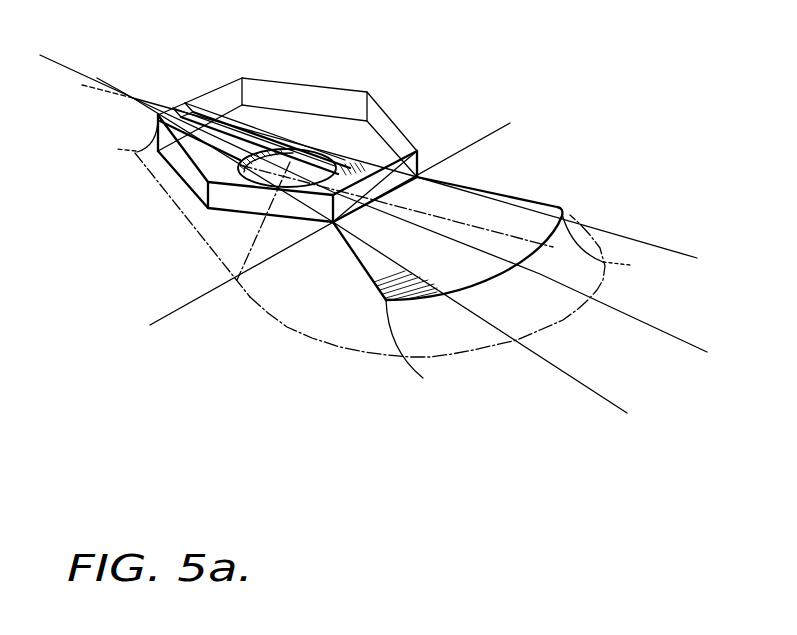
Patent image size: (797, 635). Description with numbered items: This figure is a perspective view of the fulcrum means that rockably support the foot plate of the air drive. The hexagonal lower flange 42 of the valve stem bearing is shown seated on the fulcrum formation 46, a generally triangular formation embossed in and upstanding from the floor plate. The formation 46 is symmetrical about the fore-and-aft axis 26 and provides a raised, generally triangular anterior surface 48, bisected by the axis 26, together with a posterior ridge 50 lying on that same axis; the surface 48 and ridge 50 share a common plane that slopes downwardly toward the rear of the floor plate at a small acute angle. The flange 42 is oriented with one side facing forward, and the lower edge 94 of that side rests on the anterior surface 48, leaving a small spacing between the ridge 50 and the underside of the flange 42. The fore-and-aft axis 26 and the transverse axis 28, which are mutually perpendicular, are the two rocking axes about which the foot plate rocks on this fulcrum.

The fore-and-aft axis 26 is at (670, 333).
The transverse axis 28 is at (192, 302).
The polygonal flange 42 is at (193, 192).
The fulcrum formation 46 is at (540, 190).
The anterior surface 48 is at (472, 225).
The posterior ridge 50 is at (188, 118).
The lower edge 94 is at (343, 242).